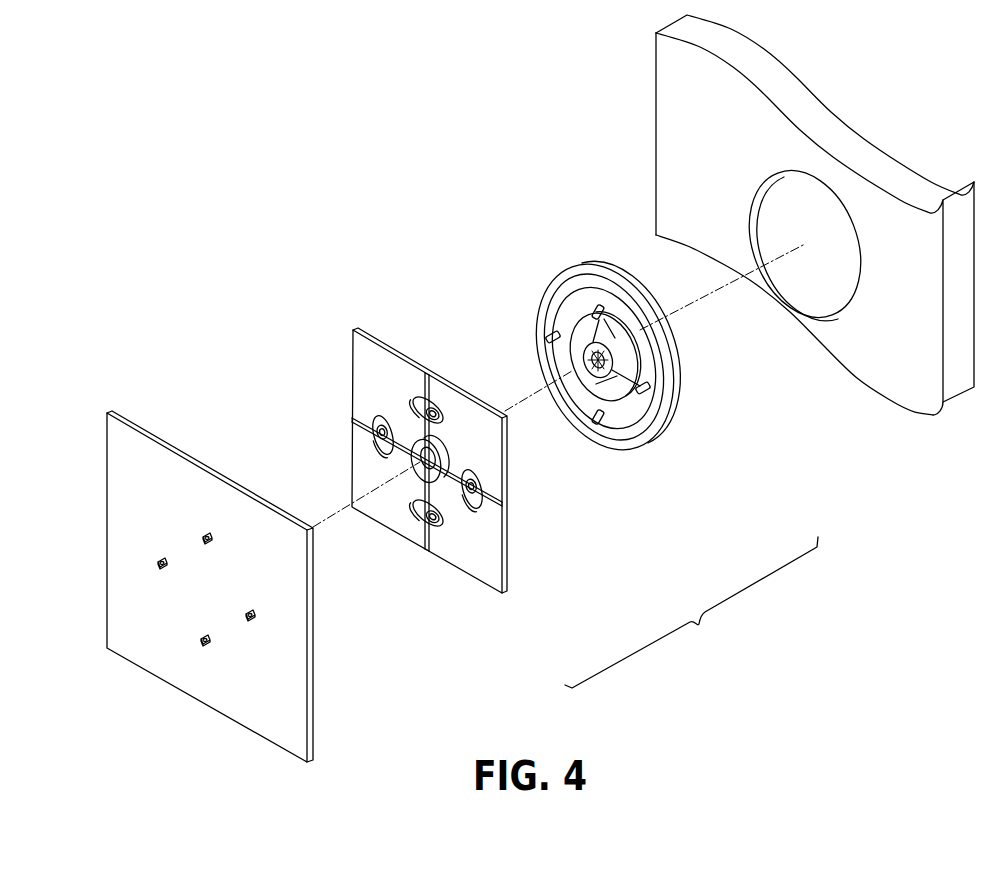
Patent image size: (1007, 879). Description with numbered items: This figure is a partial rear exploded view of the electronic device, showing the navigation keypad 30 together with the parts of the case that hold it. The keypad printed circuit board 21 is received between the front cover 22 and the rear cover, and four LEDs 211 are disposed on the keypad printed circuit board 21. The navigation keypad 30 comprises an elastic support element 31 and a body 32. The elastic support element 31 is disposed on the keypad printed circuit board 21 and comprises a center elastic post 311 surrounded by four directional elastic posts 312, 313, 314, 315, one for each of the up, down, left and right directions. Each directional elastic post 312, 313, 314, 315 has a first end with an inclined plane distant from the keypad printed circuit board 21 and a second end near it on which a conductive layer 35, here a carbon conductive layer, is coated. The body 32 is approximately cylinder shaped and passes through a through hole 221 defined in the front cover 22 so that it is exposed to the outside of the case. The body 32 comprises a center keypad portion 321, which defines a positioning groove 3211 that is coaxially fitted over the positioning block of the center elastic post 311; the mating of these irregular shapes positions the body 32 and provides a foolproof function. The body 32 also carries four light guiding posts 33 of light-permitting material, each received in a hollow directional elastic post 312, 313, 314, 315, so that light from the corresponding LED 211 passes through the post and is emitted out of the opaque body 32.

The keypad printed circuit board 21 is at (128, 470).
The LEDs 211 is at (200, 535).
The front cover 22 is at (863, 213).
The through hole 221 is at (815, 312).
The navigation keypad 30 is at (691, 612).
The elastic support element 31 is at (512, 575).
The center elastic post 311 is at (418, 455).
The directional elastic post 312 is at (418, 398).
The directional elastic post 313 is at (375, 440).
The directional elastic post 314 is at (412, 513).
The directional elastic post 315 is at (462, 510).
The body 32 is at (677, 436).
The center keypad portion 321 is at (620, 345).
The positioning groove 3211 is at (590, 358).
The light guiding posts 33 is at (602, 300).
The conductive layer 35 is at (365, 413).